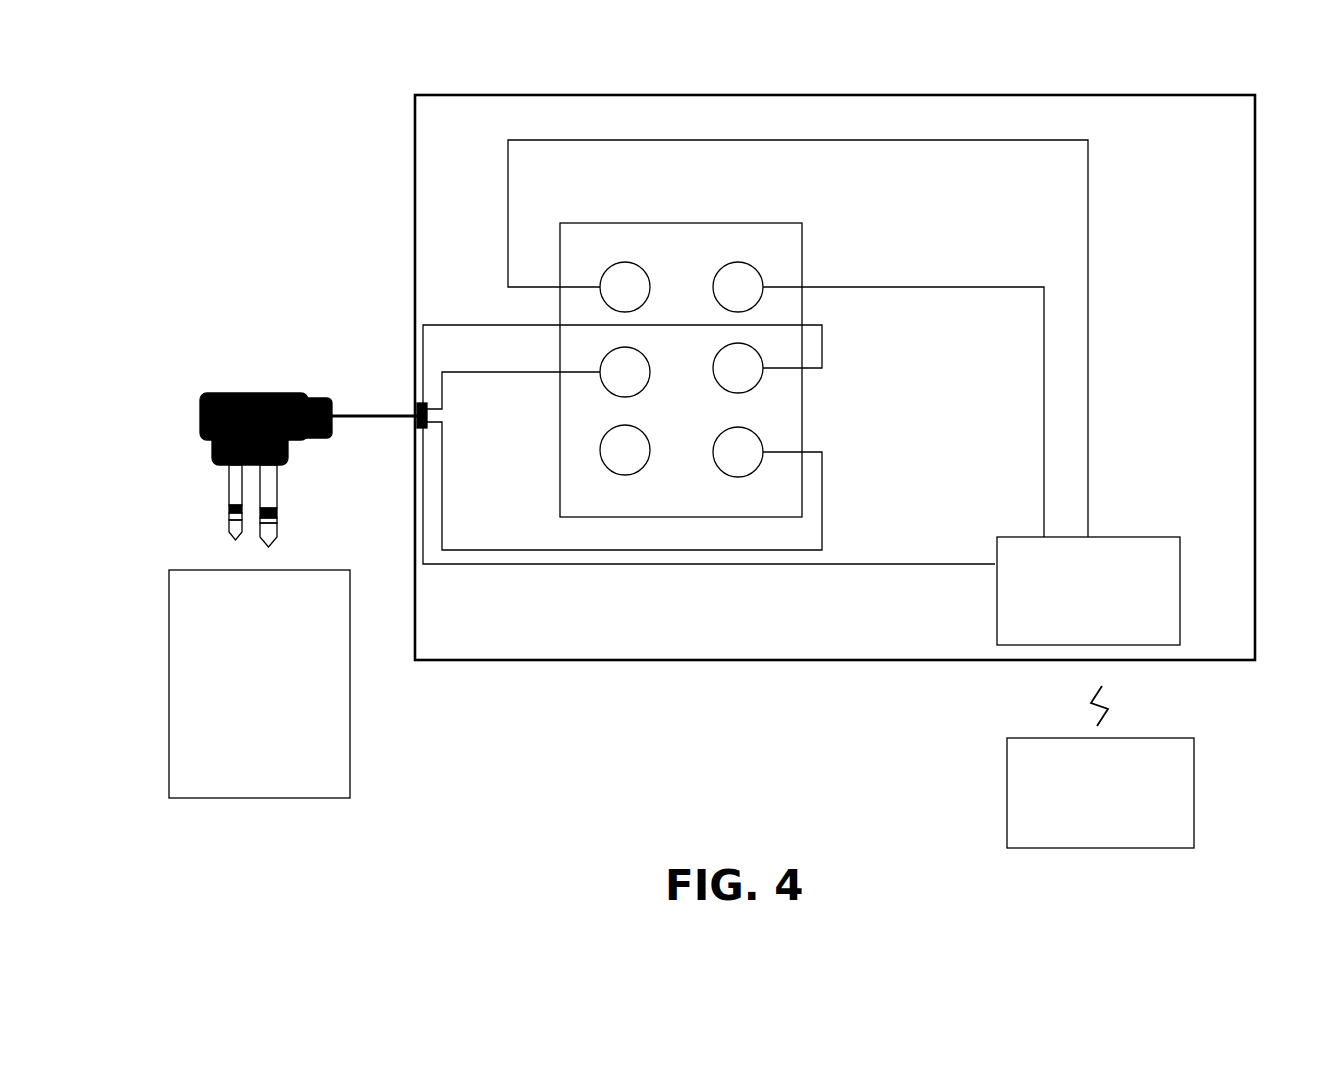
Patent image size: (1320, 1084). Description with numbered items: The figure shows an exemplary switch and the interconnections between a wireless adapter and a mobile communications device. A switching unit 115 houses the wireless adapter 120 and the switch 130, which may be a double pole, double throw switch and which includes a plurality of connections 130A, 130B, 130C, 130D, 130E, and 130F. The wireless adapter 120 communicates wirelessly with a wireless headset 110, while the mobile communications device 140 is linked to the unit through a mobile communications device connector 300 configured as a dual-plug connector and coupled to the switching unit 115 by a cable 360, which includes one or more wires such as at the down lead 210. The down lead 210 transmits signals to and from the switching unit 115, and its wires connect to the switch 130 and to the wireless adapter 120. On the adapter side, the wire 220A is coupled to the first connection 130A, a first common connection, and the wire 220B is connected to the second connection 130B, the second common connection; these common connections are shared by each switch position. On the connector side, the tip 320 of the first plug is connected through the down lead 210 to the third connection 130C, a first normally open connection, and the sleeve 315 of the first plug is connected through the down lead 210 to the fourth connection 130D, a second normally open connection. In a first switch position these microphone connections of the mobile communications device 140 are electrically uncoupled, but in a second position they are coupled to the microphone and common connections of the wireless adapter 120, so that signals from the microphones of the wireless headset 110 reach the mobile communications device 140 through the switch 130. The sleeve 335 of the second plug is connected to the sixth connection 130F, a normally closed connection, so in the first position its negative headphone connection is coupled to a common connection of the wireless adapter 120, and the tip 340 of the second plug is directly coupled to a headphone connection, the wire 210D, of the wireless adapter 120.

The wireless headset 110 is at (1195, 800).
The switching unit 115 is at (1258, 516).
The wireless adapter 120 is at (1182, 597).
The switch 130 is at (805, 243).
The first connection 130A is at (628, 256).
The second connection 130B is at (742, 256).
The third connection 130C is at (624, 398).
The fourth connection 130D is at (736, 394).
The fifth connection 130E is at (624, 476).
The sixth connection 130F is at (738, 478).
The mobile communications device 140 is at (352, 660).
The down lead 210 is at (415, 404).
The wire 210D is at (873, 566).
The wire 220A is at (1090, 233).
The wire 220B is at (1043, 362).
The mobile communications device connector 300 is at (233, 393).
The sleeve 315 is at (228, 482).
The tip 320 is at (230, 530).
The sleeve 335 is at (279, 482).
The tip 340 is at (280, 535).
The cable 360 is at (365, 419).